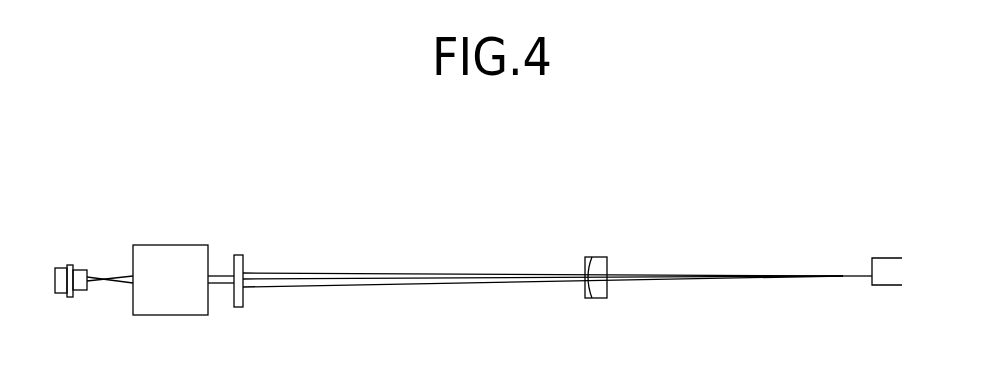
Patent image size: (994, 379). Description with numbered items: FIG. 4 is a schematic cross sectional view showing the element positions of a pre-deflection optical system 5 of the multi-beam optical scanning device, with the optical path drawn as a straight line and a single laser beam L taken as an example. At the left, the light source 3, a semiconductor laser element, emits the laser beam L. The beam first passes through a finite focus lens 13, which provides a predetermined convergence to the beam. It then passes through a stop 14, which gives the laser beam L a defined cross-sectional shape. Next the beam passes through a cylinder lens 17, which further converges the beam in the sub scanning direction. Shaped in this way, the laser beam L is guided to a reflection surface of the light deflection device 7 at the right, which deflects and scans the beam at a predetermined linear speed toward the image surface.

The pre-deflection optical system 5 is at (452, 177).
The light source 3 is at (84, 270).
The finite focus lens 13 is at (176, 249).
The stop 14 is at (239, 252).
The cylinder lens 17 is at (583, 265).
The laser beam L is at (756, 274).
The light deflection device 7 is at (885, 258).